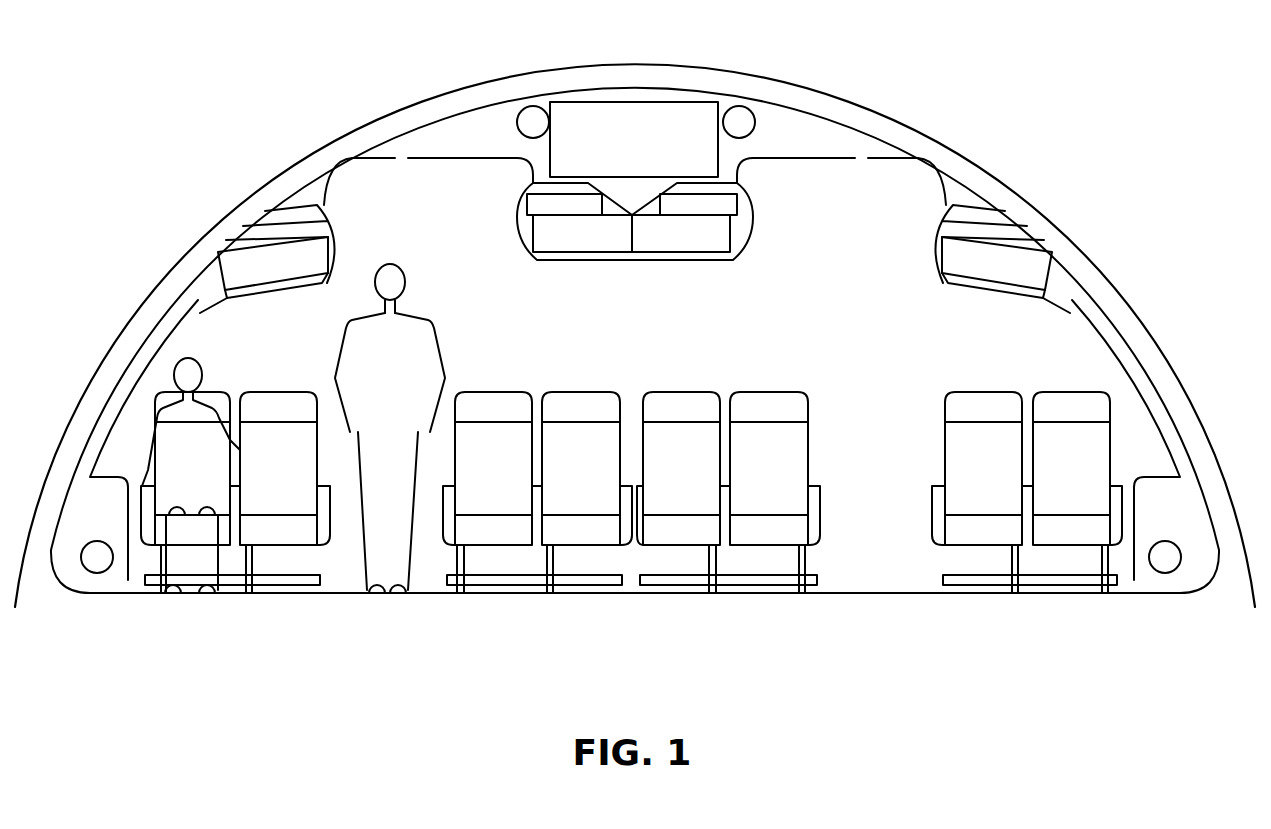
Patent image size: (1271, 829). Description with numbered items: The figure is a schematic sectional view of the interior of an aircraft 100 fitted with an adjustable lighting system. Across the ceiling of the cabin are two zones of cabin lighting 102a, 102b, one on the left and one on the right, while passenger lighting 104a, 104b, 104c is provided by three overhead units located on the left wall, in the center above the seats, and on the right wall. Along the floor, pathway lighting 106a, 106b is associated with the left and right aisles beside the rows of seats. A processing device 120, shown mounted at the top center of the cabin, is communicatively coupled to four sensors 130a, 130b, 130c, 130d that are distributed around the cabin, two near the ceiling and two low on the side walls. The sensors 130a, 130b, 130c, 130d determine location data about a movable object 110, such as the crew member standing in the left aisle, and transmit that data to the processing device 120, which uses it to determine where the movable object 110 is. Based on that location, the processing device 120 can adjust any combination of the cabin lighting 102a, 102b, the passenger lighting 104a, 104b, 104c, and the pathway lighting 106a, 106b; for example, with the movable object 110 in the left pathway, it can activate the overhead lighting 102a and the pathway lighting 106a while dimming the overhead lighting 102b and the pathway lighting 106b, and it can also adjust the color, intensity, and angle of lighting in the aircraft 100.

The aircraft 100 is at (147, 237).
The cabin lighting 102a is at (482, 162).
The cabin lighting 102b is at (897, 162).
The passenger lighting 104a is at (306, 290).
The passenger lighting 104b is at (575, 262).
The passenger lighting 104c is at (1048, 306).
The pathway lighting 106a is at (322, 593).
The pathway lighting 106b is at (820, 593).
The movable object 110 is at (375, 396).
The processing device 120 is at (619, 152).
The sensor 130a is at (97, 574).
The sensor 130b is at (532, 106).
The sensor 130c is at (738, 106).
The sensor 130d is at (1165, 574).